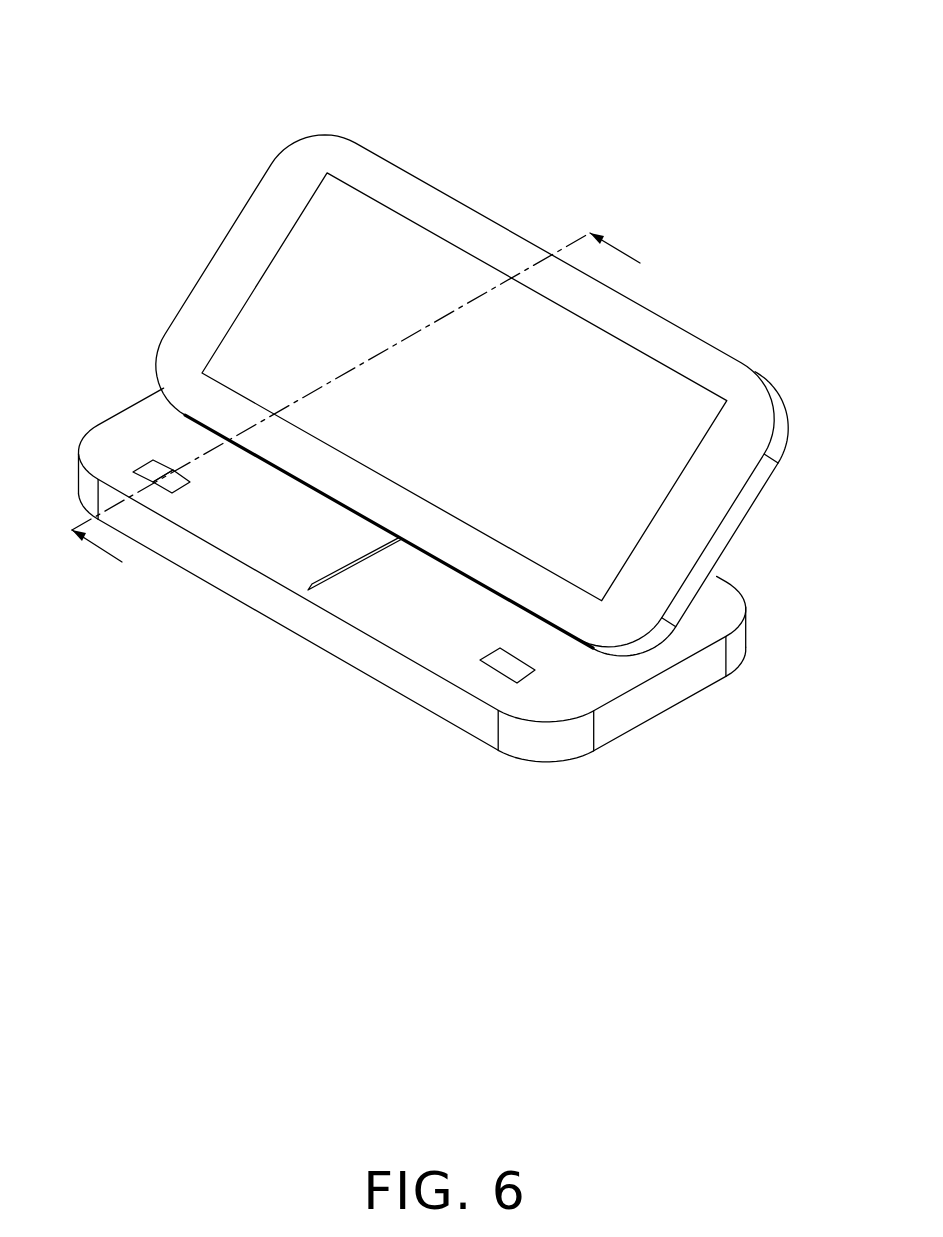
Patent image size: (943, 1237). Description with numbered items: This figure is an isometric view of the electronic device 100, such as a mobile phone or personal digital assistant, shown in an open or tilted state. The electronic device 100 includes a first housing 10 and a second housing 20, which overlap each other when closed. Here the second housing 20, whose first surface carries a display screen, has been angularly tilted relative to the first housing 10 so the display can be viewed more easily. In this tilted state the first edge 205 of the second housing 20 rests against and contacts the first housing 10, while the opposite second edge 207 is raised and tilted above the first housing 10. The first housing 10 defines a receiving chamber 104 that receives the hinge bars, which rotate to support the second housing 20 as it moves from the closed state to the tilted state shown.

The electronic device 100 is at (466, 42).
The first housing 10 is at (412, 595).
The second housing 20 is at (471, 395).
The second edge 207 is at (480, 213).
The first edge 205 is at (290, 475).
The receiving chamber 104 is at (310, 585).